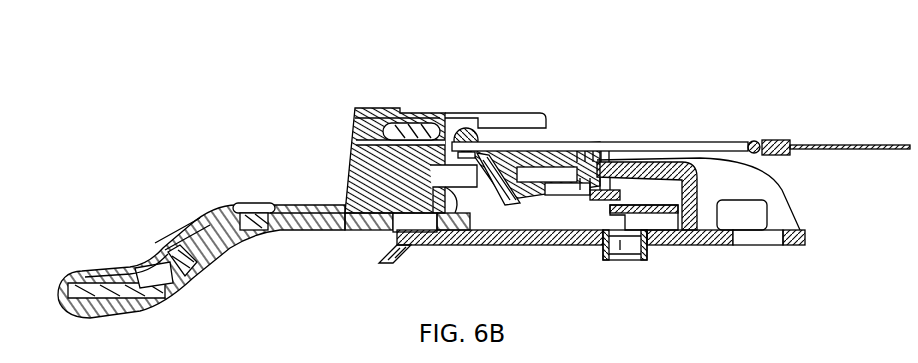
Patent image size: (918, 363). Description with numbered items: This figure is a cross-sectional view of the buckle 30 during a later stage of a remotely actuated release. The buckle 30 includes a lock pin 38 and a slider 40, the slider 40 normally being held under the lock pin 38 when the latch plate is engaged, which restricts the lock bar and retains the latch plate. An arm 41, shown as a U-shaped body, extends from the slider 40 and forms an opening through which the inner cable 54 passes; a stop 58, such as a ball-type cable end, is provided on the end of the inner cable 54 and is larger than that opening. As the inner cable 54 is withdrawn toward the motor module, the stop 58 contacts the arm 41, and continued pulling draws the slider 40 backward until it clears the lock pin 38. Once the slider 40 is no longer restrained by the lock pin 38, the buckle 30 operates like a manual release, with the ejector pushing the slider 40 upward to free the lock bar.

The buckle 30 is at (286, 86).
The lock pin 38 is at (468, 133).
The slider 40 is at (498, 160).
The arm 41 is at (635, 148).
The stop 58 is at (752, 141).
The inner cable 54 is at (843, 145).